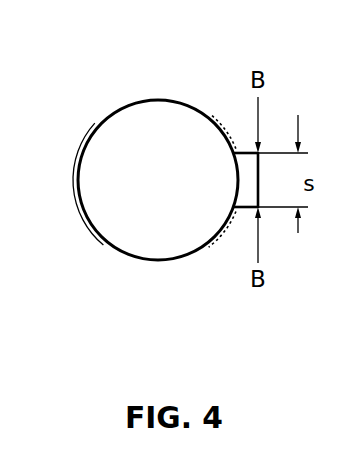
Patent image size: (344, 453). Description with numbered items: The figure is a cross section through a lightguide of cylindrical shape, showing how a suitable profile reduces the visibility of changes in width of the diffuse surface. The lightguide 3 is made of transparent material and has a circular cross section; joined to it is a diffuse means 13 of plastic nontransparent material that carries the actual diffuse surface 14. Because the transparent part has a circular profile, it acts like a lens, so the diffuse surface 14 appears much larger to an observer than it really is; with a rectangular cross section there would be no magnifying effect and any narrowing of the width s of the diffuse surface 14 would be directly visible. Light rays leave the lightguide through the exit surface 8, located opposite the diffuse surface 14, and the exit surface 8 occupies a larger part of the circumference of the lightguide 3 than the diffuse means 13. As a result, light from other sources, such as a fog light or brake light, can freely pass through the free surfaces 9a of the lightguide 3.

The lightguide 3 is at (160, 259).
The exit surface 8 is at (84, 226).
The free surfaces 9a is at (228, 121).
The diffuse means 13 is at (257, 195).
The diffuse surface 14 is at (233, 180).